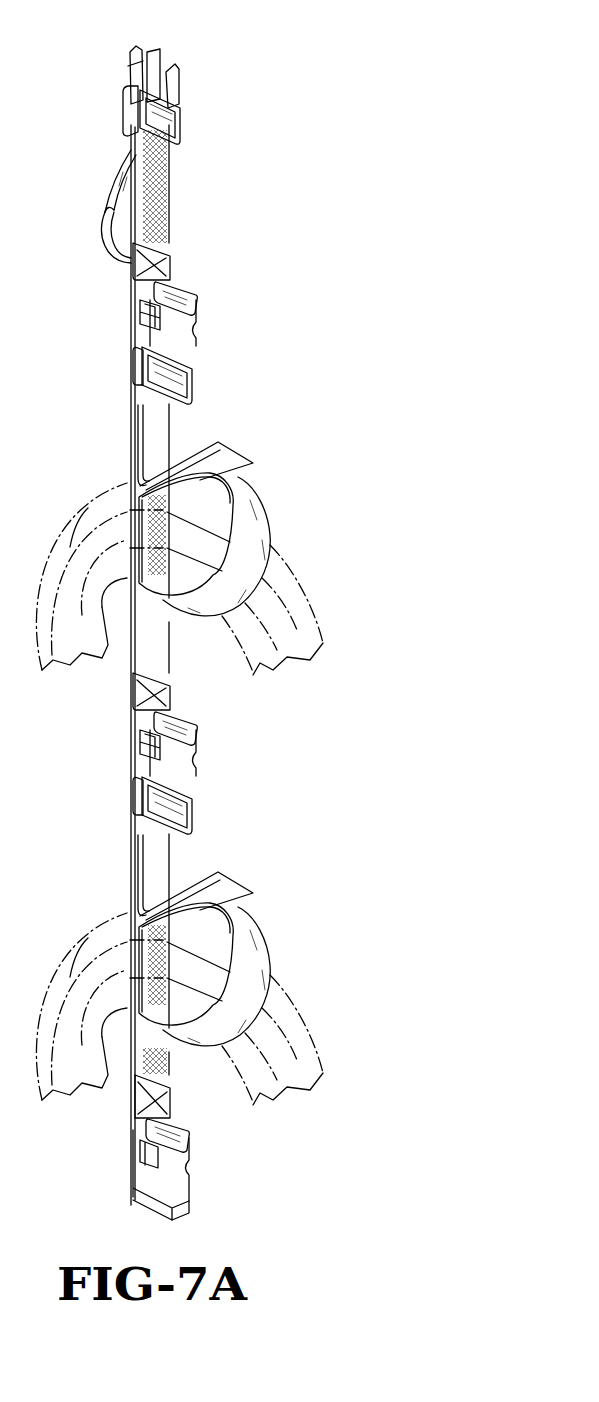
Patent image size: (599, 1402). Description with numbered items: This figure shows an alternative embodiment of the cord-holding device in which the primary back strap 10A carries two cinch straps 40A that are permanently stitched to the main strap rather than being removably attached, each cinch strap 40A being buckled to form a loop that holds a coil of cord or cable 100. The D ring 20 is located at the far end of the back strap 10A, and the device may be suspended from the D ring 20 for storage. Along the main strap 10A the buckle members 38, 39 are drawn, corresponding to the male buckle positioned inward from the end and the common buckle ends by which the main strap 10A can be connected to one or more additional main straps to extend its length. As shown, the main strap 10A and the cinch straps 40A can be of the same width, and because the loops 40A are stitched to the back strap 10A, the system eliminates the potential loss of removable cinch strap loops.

The primary back strap 10A is at (203, 194).
The D ring 20 is at (100, 237).
The male buckle member 38 is at (203, 304).
The female buckle member 39 is at (180, 66).
The cinch strap 40A is at (282, 489).
The coil of cord or cable 100 is at (295, 620).